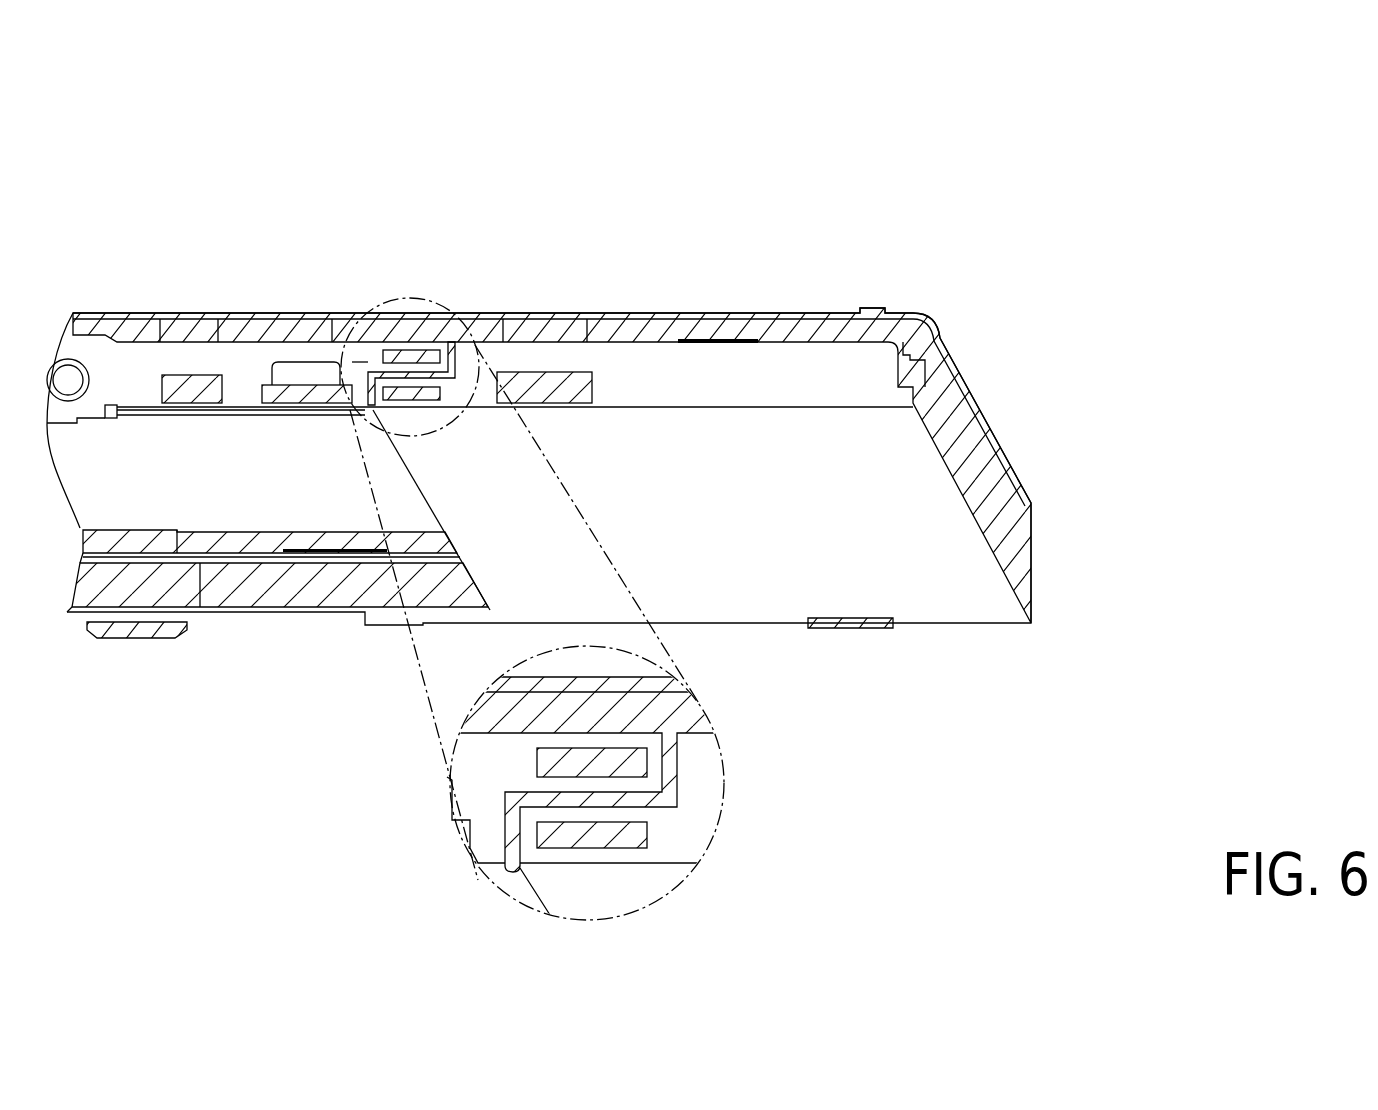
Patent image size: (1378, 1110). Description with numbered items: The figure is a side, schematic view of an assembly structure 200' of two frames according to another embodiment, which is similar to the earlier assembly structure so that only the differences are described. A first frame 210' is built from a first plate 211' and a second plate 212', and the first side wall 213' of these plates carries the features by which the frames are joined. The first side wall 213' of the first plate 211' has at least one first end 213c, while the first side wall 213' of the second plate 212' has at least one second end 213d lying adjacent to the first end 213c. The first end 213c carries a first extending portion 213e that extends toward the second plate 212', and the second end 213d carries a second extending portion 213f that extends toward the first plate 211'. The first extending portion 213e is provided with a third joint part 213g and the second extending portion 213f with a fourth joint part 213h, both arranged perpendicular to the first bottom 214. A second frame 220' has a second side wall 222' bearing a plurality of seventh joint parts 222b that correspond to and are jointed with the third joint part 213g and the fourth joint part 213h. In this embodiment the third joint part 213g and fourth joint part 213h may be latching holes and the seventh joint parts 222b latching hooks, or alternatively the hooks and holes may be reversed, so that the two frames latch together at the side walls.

The assembly structure of two frames 200' is at (1110, 805).
The first frame 210' is at (421, 84).
The first plate 211' is at (317, 136).
The second plate 212' is at (522, 136).
The first side wall 213' is at (489, 286).
The first bottom 214 is at (243, 412).
The second frame 220' is at (539, 428).
The second side wall 222' is at (552, 429).
The seventh joint part 222b is at (537, 772).
The first end 213c is at (508, 836).
The second end 213d is at (673, 768).
The first extending portion 213e is at (555, 742).
The second extending portion 213f is at (653, 862).
The third joint part 213g is at (537, 763).
The fourth joint part 213h is at (650, 830).